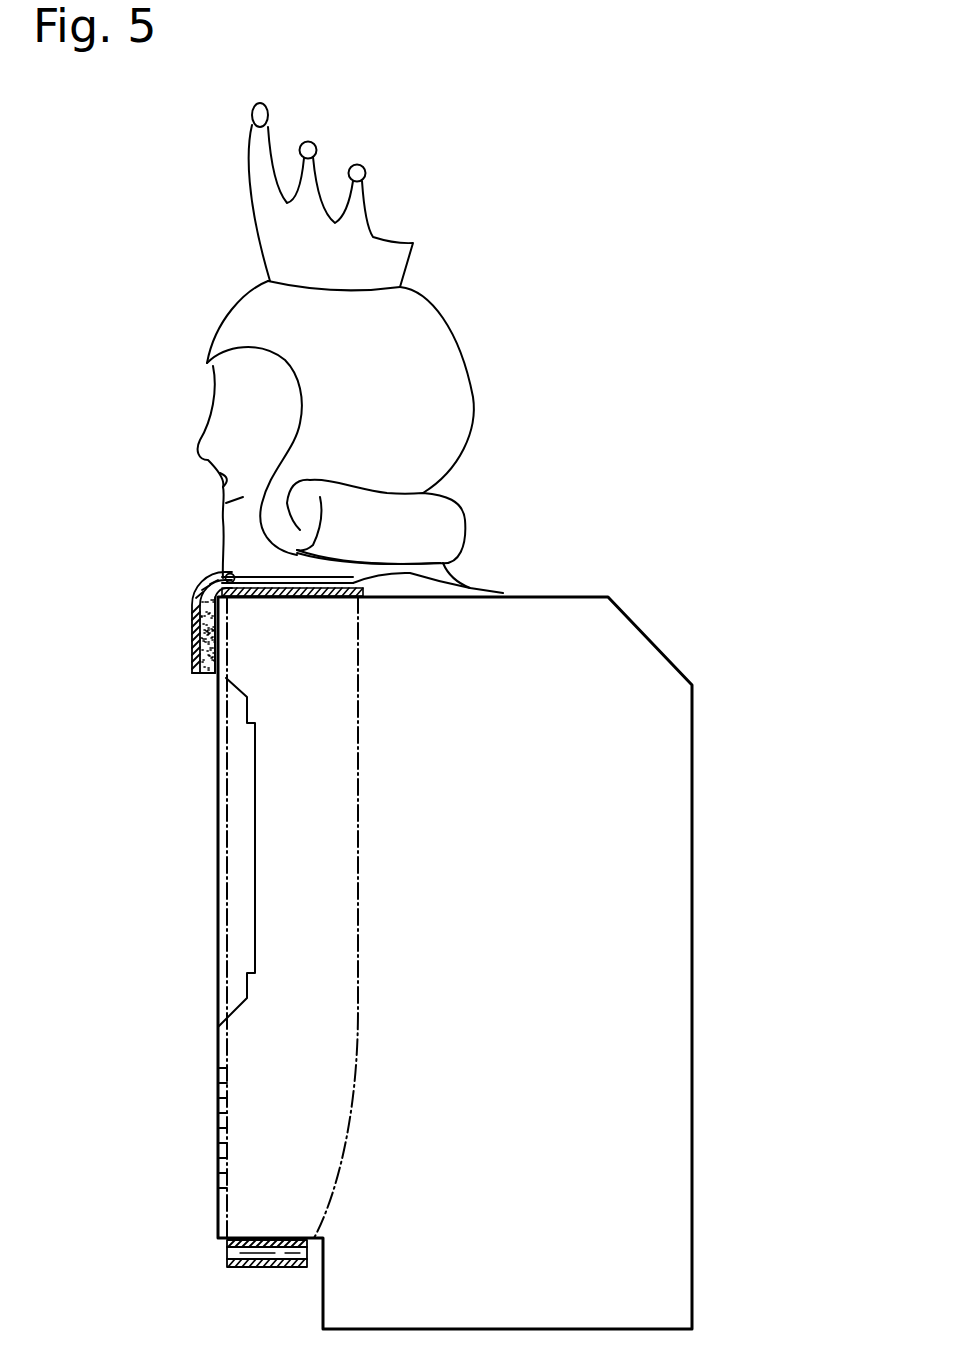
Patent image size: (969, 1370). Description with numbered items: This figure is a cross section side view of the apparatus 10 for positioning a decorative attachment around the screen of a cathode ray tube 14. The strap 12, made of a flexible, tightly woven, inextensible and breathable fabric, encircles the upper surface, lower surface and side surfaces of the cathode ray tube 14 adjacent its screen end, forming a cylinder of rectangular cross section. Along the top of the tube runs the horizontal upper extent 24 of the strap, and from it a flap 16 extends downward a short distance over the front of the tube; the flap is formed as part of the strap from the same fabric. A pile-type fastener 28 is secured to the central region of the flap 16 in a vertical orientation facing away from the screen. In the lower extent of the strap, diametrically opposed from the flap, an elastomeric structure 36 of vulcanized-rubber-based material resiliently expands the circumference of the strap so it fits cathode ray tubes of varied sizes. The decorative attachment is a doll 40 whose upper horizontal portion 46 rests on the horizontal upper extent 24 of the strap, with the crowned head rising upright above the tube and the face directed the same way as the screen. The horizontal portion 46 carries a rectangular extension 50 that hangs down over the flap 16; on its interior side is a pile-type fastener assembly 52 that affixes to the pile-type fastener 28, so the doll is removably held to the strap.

The apparatus for positioning around the screen of a cathode ray tube 10 is at (220, 154).
The doll 40 is at (268, 282).
The strap 12 is at (228, 574).
The pile-type fastener assembly 52 is at (205, 580).
The rectangular extension 50 is at (198, 607).
The flap 16 is at (192, 648).
The pile-type fastener 28 is at (210, 676).
The cathode ray tube 14 is at (478, 898).
The horizontal upper extent 24 is at (303, 578).
The upper horizontal portion 46 is at (323, 567).
The elastomeric structure 36 is at (253, 1265).